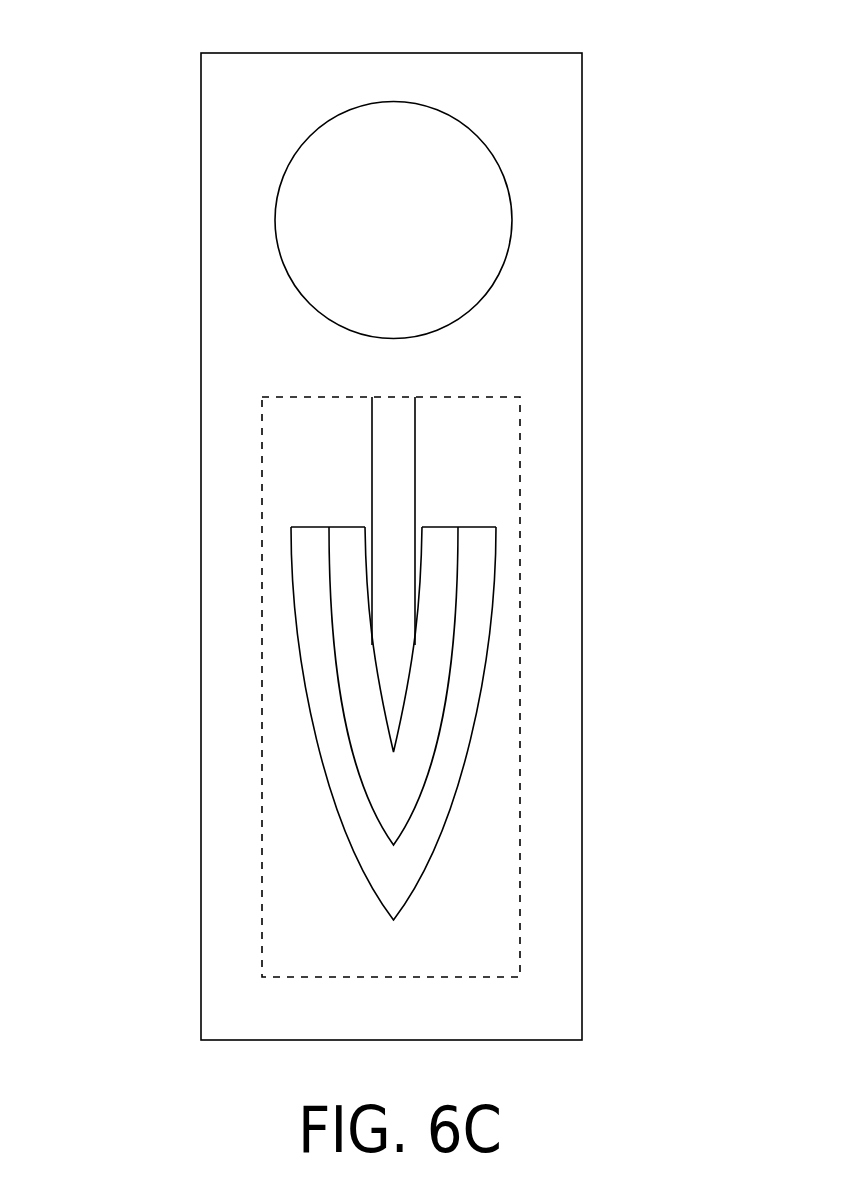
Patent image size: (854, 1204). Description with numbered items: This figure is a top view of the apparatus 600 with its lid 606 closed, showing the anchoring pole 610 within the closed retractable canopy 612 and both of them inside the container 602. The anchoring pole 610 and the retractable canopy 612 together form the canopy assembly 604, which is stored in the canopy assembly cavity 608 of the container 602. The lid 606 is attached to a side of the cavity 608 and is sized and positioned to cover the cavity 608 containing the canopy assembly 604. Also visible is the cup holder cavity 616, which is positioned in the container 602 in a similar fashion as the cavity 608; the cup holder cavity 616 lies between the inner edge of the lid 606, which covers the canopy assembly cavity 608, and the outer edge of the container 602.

The apparatus 600 is at (147, 701).
The container 602 is at (583, 422).
The canopy assembly 604 is at (336, 880).
The lid 606 is at (568, 878).
The cavity 608 is at (310, 470).
The anchoring pole 610 is at (415, 443).
The retractable canopy 612 is at (465, 761).
The cup holder cavity 616 is at (493, 183).